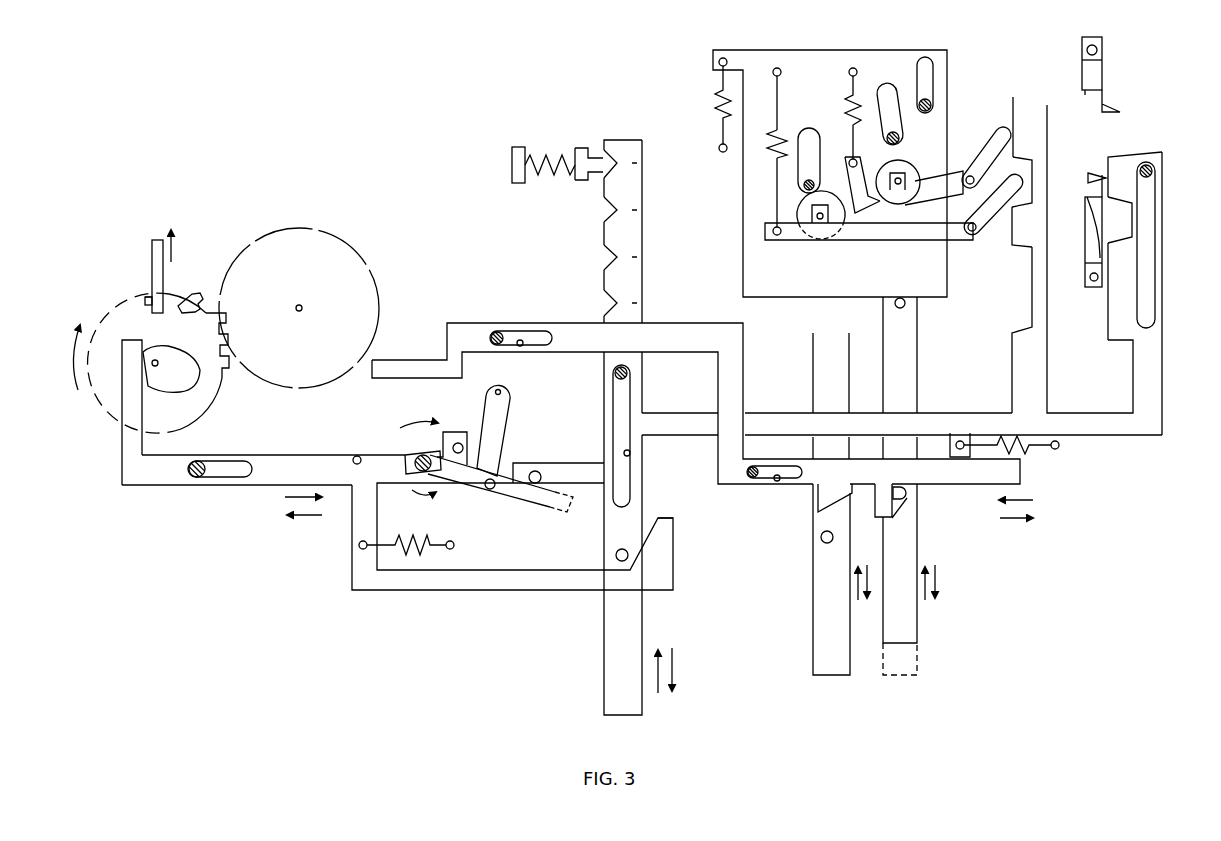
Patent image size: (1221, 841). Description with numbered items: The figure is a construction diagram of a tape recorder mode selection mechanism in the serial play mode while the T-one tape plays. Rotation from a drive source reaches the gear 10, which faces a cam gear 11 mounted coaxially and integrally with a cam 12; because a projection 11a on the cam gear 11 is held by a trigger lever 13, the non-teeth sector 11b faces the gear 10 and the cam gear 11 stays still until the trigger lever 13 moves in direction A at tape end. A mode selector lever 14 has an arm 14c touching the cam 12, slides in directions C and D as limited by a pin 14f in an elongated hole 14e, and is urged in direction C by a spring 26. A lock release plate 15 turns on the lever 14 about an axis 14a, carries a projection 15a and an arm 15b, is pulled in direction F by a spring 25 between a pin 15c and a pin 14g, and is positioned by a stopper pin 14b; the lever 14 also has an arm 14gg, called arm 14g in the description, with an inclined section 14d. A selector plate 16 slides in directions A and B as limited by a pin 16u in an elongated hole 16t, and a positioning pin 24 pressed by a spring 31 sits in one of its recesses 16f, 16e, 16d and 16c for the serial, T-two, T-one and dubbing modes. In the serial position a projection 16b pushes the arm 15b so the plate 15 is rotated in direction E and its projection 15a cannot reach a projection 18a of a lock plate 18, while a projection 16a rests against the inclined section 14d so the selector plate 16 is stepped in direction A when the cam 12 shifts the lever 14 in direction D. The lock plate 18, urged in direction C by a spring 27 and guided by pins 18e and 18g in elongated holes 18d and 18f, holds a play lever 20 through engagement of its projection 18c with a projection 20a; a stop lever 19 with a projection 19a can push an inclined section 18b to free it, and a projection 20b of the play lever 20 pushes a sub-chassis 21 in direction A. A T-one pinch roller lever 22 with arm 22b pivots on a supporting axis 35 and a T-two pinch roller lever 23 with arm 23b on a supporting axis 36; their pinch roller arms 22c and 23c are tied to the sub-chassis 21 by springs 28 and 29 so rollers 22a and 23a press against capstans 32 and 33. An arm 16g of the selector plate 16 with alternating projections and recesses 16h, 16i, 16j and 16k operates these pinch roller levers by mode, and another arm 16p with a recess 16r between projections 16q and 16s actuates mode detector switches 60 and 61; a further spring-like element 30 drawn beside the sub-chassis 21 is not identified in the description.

The gear 10 is at (260, 236).
The cam gear 11 is at (147, 334).
The projection 11a is at (145, 297).
The non-teeth sector 11b is at (200, 294).
The cam 12 is at (192, 378).
The trigger lever 13 is at (152, 255).
The mode selector lever 14 is at (388, 491).
The axis 14a is at (418, 458).
The stopper pin 14b is at (462, 440).
The arm 14c is at (128, 397).
The inclined section 14d is at (673, 555).
The elongated hole 14e is at (228, 478).
The pin 14f is at (194, 477).
The pin 14g is at (355, 457).
The arm 14gg is at (538, 563).
The lock release plate 15 is at (482, 464).
The projection 15a is at (486, 390).
The arm 15b is at (545, 505).
The pin 15c is at (495, 490).
The selector plate 16 is at (867, 392).
The projection 16a is at (615, 556).
The projection 16b is at (540, 468).
The recess 16c is at (605, 305).
The recess 16d is at (605, 258).
The recess 16e is at (605, 210).
The recess 16f is at (612, 150).
The arm 16g is at (1042, 378).
The projection 16h is at (1040, 325).
The recess 16i is at (1048, 224).
The projection 16j is at (1048, 177).
The upper edge portion 16k is at (1048, 130).
The arm 16p is at (1165, 395).
The projection 16q is at (1150, 290).
The recess 16r is at (1132, 222).
The projection 16s is at (1125, 167).
The elongated hole 16t is at (626, 452).
The pin 16u is at (628, 373).
The lock plate 18 is at (713, 420).
The projection 18a is at (500, 384).
The inclined section 18b is at (815, 512).
The projection 18c is at (915, 520).
The elongated hole 18d is at (777, 481).
The pin 18e is at (748, 478).
The elongated hole 18f is at (520, 338).
The pin 18g is at (495, 330).
The stop lever 19 is at (815, 504).
The projection 19a is at (823, 545).
The play lever 20 is at (930, 486).
The projection 20a is at (920, 495).
The projection 20b is at (905, 306).
The sub-chassis 21 is at (748, 188).
The pinch roller lever 22 is at (890, 235).
The pinch roller 22a is at (840, 242).
The arm 22b is at (1003, 203).
The pinch roller arm 22c is at (780, 242).
The pinch roller lever 23 is at (943, 128).
The pinch roller 23a is at (897, 152).
The arm 23b is at (1003, 138).
The pinch roller arm 23c is at (848, 165).
The positioning pin 24 is at (590, 155).
The spring 25 is at (462, 476).
The spring 26 is at (408, 540).
The spring 27 is at (1040, 448).
The spring 28 is at (775, 125).
The spring 29 is at (850, 80).
The resistor 30 is at (713, 100).
The spring 31 is at (528, 150).
The capstan 32 is at (787, 140).
The capstan 33 is at (917, 85).
The supporting axis 35 is at (972, 242).
The supporting axis 36 is at (975, 170).
The mode detector switch 60 is at (1087, 270).
The mode detector switch 61 is at (1103, 77).